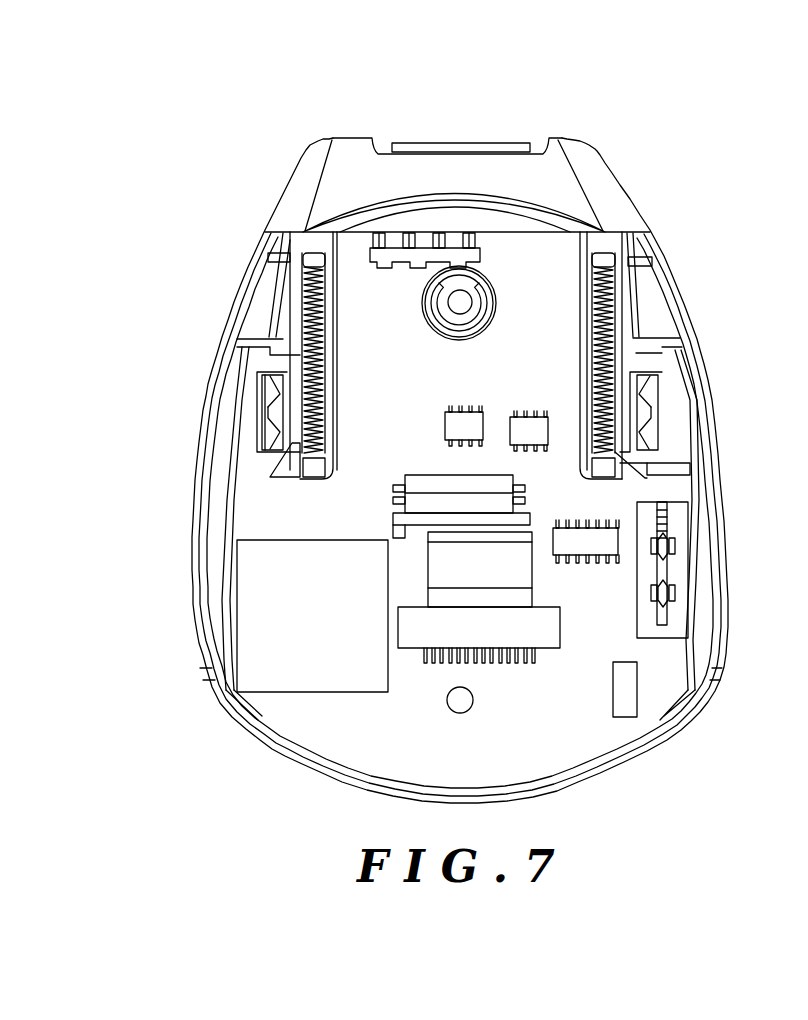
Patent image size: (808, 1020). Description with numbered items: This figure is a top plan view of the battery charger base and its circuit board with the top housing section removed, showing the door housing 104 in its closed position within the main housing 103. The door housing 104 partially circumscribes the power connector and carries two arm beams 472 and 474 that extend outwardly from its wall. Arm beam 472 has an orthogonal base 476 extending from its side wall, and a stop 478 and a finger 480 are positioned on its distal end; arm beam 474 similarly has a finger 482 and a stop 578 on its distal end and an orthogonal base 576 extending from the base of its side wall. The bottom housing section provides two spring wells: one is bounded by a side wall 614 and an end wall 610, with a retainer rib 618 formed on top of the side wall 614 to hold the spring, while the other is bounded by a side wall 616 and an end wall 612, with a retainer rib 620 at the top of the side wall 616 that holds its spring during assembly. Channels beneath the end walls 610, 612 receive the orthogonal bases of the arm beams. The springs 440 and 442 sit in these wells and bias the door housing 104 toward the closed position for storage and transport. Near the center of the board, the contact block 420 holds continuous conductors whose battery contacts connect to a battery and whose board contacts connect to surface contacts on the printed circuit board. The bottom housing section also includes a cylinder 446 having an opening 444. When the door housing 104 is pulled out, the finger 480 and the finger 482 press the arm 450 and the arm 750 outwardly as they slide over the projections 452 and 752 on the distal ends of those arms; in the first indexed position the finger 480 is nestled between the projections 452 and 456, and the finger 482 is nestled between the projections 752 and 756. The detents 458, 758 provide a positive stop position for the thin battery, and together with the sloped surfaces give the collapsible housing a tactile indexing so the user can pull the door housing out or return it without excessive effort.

The main housing 103 is at (648, 758).
The door housing 104 is at (611, 146).
The contact block 420 is at (493, 253).
The spring 440 is at (322, 392).
The spring 442 is at (593, 385).
The opening 444 is at (460, 305).
The cylinder 446 is at (460, 700).
The arm 450 is at (247, 405).
The projection 452 is at (272, 428).
The projection 456 is at (268, 388).
The detent 458 is at (305, 432).
The arm beam 472 is at (297, 293).
The arm beam 474 is at (622, 292).
The orthogonal base 476 is at (326, 262).
The stop 478 is at (313, 460).
The finger 480 is at (278, 473).
The finger 482 is at (640, 475).
The orthogonal base 576 is at (594, 262).
The stop 578 is at (586, 529).
The end wall 610 is at (320, 255).
The end wall 612 is at (597, 262).
The side wall 614 is at (328, 286).
The side wall 616 is at (592, 286).
The retainer rib 618 is at (325, 328).
The retainer rib 620 is at (593, 329).
The arm 750 is at (668, 408).
The projection 752 is at (648, 435).
The projection 756 is at (645, 388).
The detent 758 is at (607, 467).